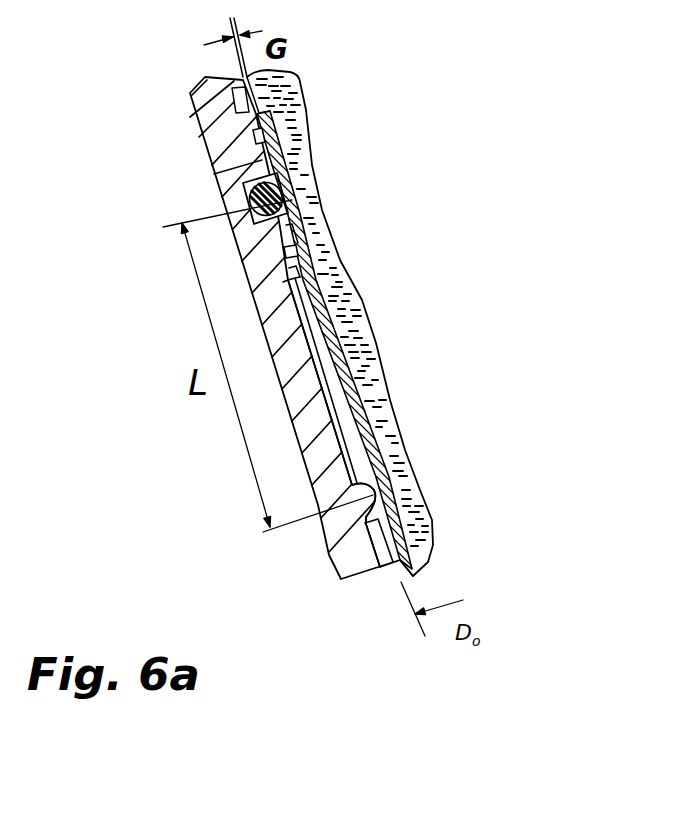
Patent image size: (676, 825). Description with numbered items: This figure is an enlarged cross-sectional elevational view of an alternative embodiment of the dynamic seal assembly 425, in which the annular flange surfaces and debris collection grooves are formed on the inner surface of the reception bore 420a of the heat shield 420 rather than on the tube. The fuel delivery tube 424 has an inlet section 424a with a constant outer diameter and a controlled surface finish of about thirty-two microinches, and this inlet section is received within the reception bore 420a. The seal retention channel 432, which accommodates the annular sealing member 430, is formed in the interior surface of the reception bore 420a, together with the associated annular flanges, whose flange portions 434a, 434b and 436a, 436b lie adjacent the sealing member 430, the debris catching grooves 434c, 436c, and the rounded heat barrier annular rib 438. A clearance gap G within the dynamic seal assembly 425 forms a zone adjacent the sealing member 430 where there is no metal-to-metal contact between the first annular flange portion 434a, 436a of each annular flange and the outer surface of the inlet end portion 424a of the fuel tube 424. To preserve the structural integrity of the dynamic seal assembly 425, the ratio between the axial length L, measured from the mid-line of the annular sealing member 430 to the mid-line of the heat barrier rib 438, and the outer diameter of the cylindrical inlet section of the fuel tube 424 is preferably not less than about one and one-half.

The heat shield 420 is at (342, 580).
The reception bore 420a is at (338, 418).
The fuel delivery tube 424 is at (401, 574).
The inlet section of the fuel delivery tube 424a is at (330, 362).
The dynamic seal assembly 425 is at (183, 457).
The annular sealing member 430 is at (298, 189).
The seal retention channel 432 is at (243, 185).
The first annular flange portion 434a is at (317, 148).
The annular flange portion 434b is at (300, 87).
The debris catching groove 434c is at (270, 132).
The first annular flange portion 436a is at (270, 241).
The annular flange portion 436b is at (289, 268).
The debris catching groove 436c is at (296, 250).
The rounded heat barrier annular rib 438 is at (374, 492).